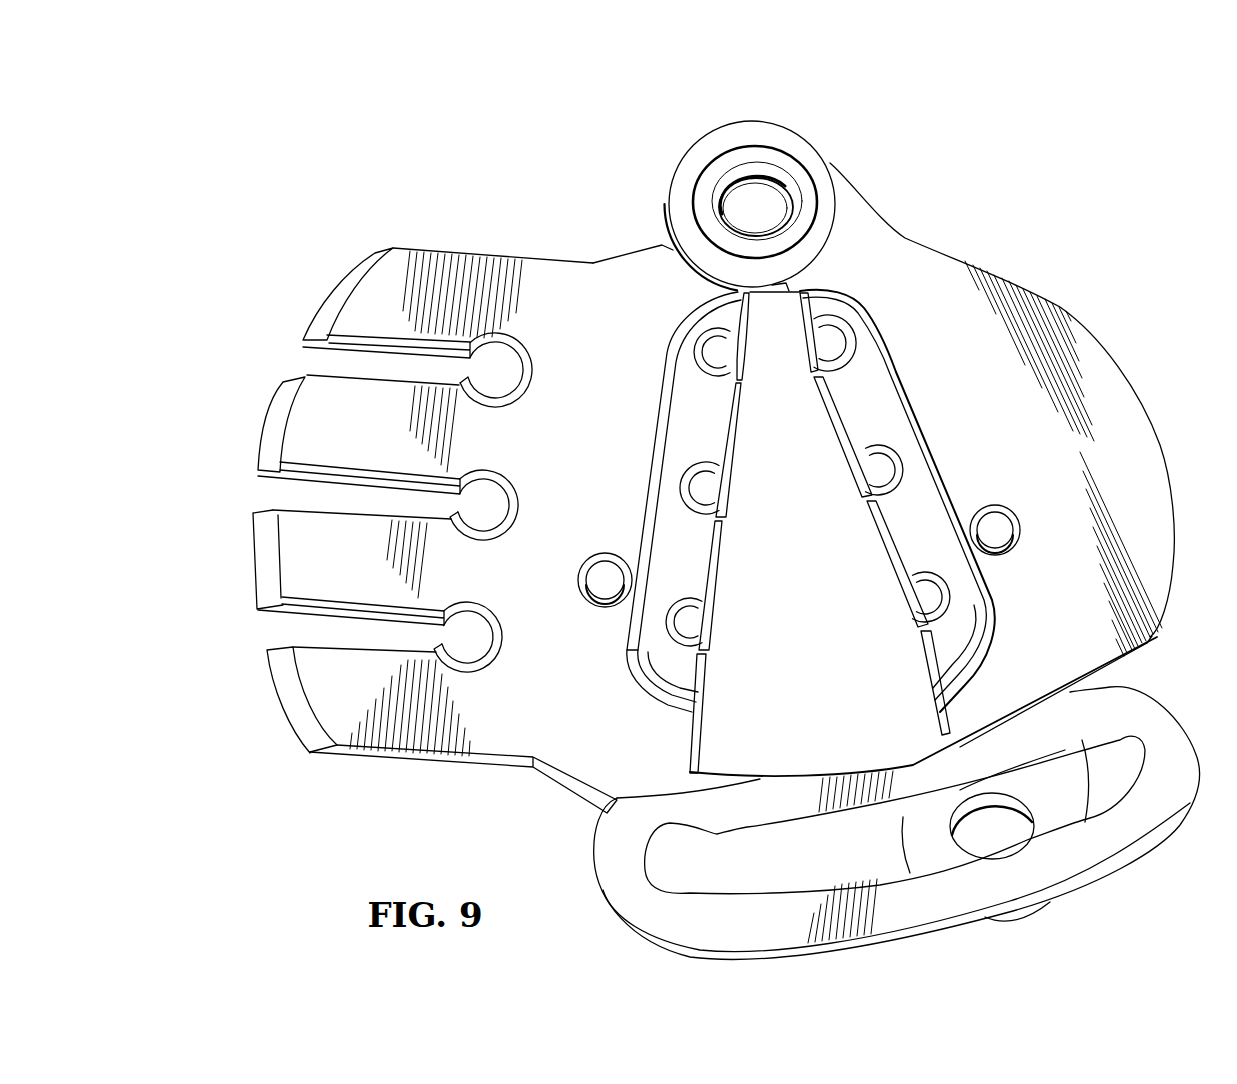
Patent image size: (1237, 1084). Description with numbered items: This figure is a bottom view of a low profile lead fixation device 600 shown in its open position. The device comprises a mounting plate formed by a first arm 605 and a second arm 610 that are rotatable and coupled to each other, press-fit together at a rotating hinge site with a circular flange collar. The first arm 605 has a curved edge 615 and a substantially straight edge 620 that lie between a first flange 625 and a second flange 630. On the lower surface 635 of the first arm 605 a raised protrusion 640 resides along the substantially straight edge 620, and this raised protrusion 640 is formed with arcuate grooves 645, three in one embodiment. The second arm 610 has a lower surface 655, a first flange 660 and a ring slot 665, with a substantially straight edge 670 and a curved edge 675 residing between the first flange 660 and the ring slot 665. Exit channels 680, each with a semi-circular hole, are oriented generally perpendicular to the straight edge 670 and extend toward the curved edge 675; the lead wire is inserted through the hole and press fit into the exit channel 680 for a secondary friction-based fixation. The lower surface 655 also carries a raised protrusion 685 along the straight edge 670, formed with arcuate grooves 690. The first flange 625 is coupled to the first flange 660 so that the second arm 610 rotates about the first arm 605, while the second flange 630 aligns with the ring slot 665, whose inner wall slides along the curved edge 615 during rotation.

The low profile lead fixation device 600 is at (966, 100).
The first arm 605 is at (1010, 243).
The second arm 610 is at (431, 787).
The curved edge 615 is at (1102, 346).
The substantially straight edge 620 is at (843, 432).
The first flange 625 is at (790, 122).
The second flange 630 is at (895, 835).
The lower surface 635 is at (1126, 440).
The raised protrusion 640 is at (862, 320).
The arcuate groove 645 is at (878, 458).
The lower surface 655 is at (560, 290).
The first flange 660 is at (736, 176).
The ring slot 665 is at (808, 892).
The substantially straight edge 670 is at (720, 568).
The curved edge 675 is at (270, 425).
The exit channel 680 is at (285, 497).
The raised protrusion 685 is at (682, 430).
The arcuate groove 690 is at (712, 497).